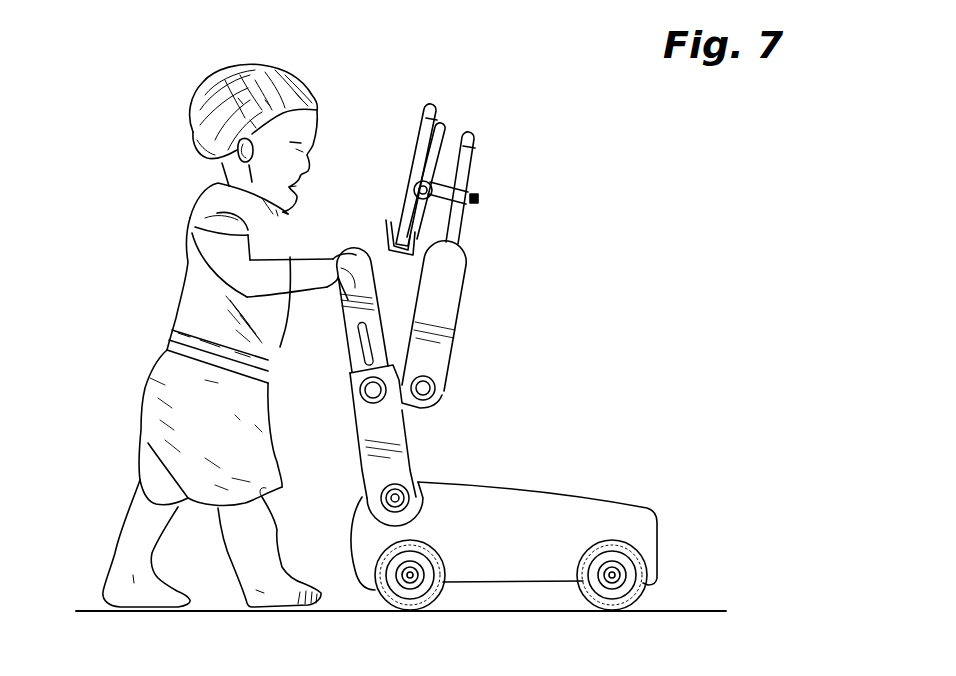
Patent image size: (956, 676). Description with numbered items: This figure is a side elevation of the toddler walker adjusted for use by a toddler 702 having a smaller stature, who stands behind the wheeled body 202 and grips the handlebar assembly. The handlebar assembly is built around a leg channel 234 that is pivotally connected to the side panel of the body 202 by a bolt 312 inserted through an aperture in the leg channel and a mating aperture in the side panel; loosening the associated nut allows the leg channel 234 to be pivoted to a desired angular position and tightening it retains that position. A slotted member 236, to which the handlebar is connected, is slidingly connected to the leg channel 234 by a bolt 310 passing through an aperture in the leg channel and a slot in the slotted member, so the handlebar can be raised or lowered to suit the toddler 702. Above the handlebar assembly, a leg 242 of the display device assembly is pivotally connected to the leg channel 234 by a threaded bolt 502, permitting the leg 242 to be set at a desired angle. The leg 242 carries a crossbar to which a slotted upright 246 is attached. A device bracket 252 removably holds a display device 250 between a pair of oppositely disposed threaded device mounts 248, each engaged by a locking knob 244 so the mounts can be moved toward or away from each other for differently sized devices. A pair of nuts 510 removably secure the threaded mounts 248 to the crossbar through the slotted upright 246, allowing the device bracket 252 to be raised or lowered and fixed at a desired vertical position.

The toddler 702 is at (163, 232).
The body 202 is at (679, 511).
The leg channel 234 is at (405, 425).
The slotted member 236 is at (343, 297).
The leg 242 is at (463, 283).
The locking knob 244 is at (415, 186).
The slotted upright 246 is at (468, 142).
The threaded device mount 248 is at (445, 182).
The display device 250 is at (425, 110).
The device bracket 252 is at (386, 222).
The bolt 310 is at (365, 391).
The bolt 312 is at (390, 490).
The bolt 502 is at (440, 382).
The nut 510 is at (479, 198).